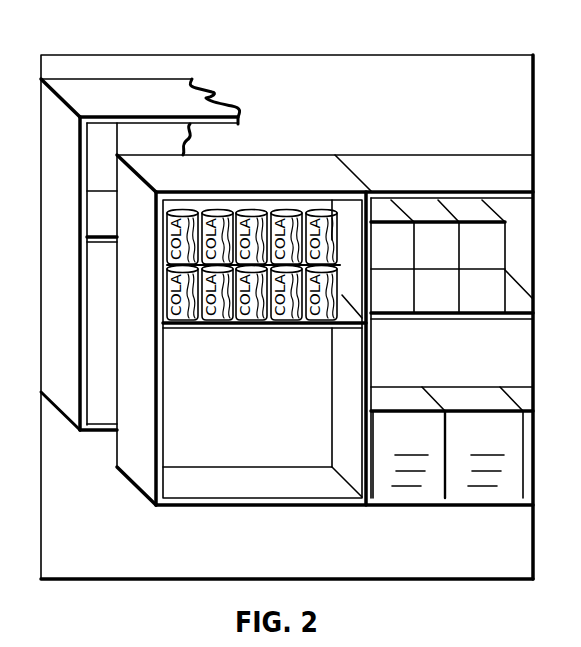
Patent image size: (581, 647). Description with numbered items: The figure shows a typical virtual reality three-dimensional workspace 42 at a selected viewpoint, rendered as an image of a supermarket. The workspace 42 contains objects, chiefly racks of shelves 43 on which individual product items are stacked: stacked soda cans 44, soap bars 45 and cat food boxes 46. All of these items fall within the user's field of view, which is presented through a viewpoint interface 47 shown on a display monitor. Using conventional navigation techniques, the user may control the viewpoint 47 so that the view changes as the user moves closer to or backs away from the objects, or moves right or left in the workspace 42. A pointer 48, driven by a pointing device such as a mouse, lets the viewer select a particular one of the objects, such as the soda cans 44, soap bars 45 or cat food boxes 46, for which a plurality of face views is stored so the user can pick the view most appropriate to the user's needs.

The workspace 42 is at (291, 87).
The shelf racks 43 is at (126, 93).
The stacked soda cans 44 is at (323, 225).
The soap bars 45 is at (472, 210).
The cat food boxes 46 is at (512, 478).
The viewpoint interface 47 is at (536, 350).
The pointer 48 is at (140, 306).